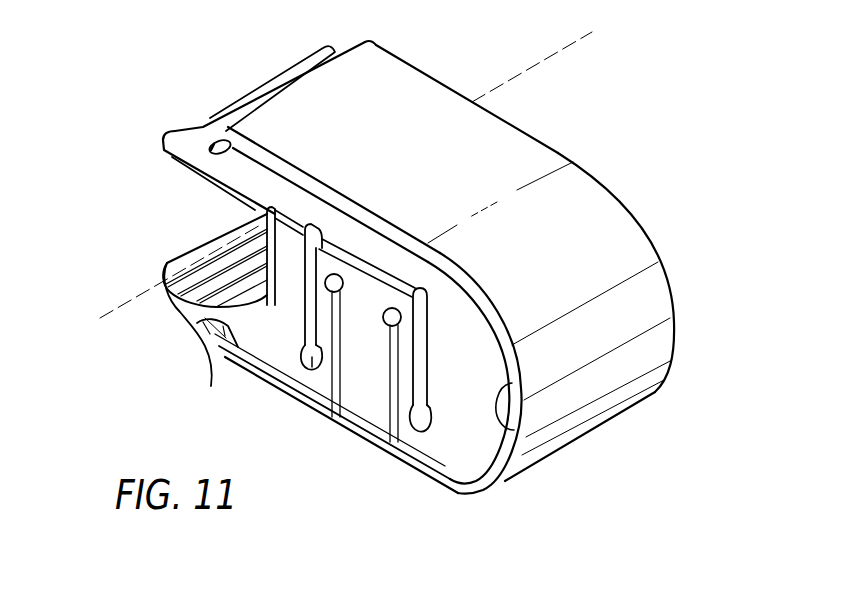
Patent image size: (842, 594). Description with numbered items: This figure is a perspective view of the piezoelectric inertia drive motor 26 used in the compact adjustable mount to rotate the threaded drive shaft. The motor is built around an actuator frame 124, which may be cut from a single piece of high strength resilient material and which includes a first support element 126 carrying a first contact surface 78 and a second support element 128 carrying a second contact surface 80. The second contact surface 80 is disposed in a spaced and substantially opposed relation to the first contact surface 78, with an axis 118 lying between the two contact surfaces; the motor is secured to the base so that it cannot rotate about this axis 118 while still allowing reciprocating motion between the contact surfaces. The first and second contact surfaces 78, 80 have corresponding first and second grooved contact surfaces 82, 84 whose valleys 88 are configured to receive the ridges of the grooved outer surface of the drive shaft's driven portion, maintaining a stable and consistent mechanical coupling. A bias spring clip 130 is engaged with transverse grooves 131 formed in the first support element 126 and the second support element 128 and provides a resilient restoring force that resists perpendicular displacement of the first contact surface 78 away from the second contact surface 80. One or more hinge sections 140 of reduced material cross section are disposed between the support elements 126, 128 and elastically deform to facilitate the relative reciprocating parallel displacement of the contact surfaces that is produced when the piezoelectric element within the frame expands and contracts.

The piezoelectric inertia drive motor 26 is at (648, 178).
The first contact surface 78 is at (183, 165).
The second contact surface 80 is at (188, 268).
The first grooved contact surface 82 is at (220, 181).
The second grooved contact surface 84 is at (233, 276).
The valleys 88 is at (208, 257).
The axis 118 is at (118, 308).
The actuator frame 124 is at (470, 435).
The first support element 126 is at (233, 166).
The second support element 128 is at (213, 305).
The bias spring clip 130 is at (639, 259).
The transverse grooves 131 is at (222, 147).
The hinge sections 140 is at (334, 283).